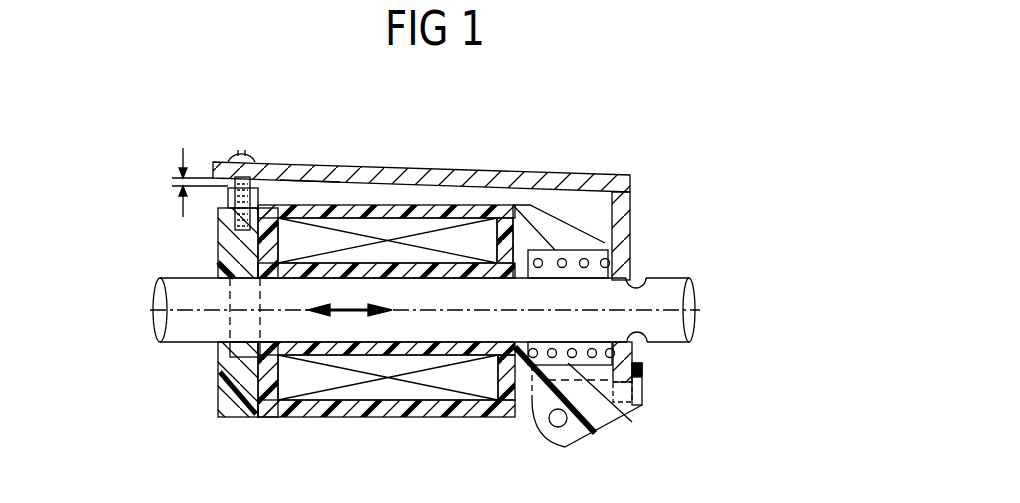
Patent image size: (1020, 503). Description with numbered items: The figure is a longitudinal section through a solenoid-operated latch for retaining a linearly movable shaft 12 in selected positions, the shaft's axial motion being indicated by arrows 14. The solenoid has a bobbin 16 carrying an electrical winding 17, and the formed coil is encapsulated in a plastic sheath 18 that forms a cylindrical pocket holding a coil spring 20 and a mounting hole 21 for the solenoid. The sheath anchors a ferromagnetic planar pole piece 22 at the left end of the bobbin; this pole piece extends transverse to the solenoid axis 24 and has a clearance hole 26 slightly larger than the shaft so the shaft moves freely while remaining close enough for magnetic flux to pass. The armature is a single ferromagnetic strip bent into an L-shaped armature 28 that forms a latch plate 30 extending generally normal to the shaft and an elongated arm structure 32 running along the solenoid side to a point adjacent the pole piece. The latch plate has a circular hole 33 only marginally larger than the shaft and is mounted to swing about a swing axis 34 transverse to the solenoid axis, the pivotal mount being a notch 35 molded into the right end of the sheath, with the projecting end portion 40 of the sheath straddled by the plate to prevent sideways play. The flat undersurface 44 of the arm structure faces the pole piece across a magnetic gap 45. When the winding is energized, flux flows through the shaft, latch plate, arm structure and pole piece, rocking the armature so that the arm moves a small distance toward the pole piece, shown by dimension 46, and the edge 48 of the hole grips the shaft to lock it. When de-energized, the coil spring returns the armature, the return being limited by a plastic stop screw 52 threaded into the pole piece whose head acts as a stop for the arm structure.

The shaft 12 is at (160, 340).
The arrows 14 is at (350, 305).
The bobbin 16 is at (265, 360).
The electrical winding 17 is at (472, 226).
The plastic sheath 18 is at (495, 418).
The coil spring 20 is at (585, 253).
The mounting hole 21 is at (558, 427).
The pole piece 22 is at (230, 262).
The solenoid axis 24 is at (513, 306).
The clearance hole 26 is at (235, 332).
The L-shaped armature 28 is at (630, 177).
The latch plate 30 is at (634, 243).
The arm structure 32 is at (357, 176).
The circular hole 33 is at (645, 337).
The swing axis 34 is at (636, 372).
The notch 35 is at (638, 385).
The projecting end portion 40 is at (628, 412).
The flat undersurface 44 is at (313, 185).
The magnetic gap 45 is at (262, 182).
The arrows 46 is at (183, 148).
The edge of hole 48 is at (648, 280).
The stop screw 52 is at (232, 152).